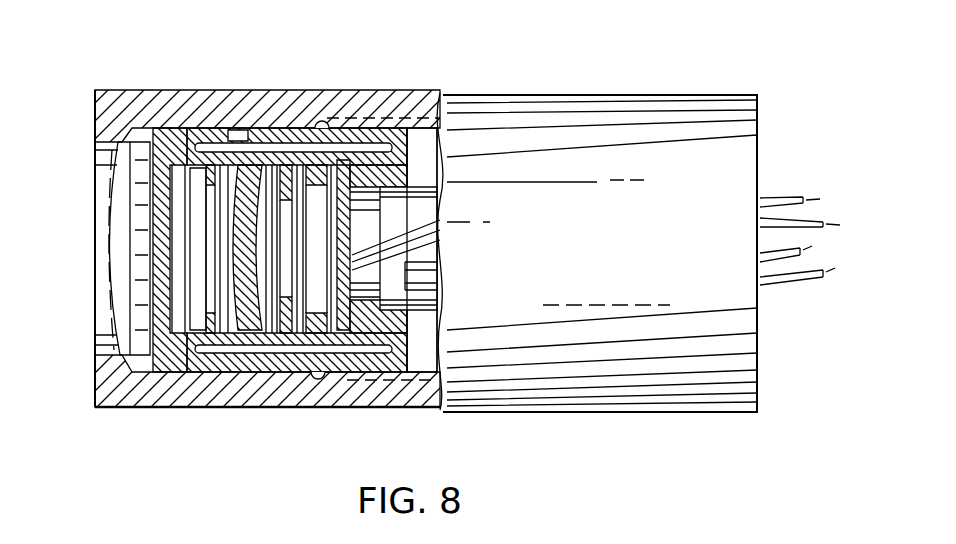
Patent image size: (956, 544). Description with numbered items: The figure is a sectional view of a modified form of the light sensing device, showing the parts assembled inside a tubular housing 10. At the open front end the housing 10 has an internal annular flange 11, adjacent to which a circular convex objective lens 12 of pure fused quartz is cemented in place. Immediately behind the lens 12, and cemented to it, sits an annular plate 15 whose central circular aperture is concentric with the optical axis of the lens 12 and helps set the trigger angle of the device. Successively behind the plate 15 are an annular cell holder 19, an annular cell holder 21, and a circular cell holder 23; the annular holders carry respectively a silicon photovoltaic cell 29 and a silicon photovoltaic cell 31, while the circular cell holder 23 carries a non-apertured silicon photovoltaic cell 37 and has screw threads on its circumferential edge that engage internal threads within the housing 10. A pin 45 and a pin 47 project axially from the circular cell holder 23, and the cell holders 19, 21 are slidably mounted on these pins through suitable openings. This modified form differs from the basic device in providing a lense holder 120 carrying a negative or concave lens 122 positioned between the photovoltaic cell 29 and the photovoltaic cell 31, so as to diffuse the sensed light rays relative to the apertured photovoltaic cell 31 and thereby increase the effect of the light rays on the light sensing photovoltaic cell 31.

The tubular housing 10 is at (373, 92).
The internal annular flange 11 is at (103, 120).
The circular convex objective lens 12 is at (120, 193).
The annular plate 15 is at (163, 133).
The annular cell holder 19 is at (203, 130).
The lense holder 120 is at (238, 132).
The pin 45 is at (258, 146).
The annular cell holder 21 is at (302, 131).
The circular cell holder 23 is at (412, 125).
The silicon photovoltaic cell 29 is at (203, 187).
The negative or concave lens 122 is at (237, 230).
The silicon photovoltaic cell 31 is at (298, 198).
The non-apertured silicon photovoltaic cell 37 is at (342, 230).
The pin 47 is at (252, 370).